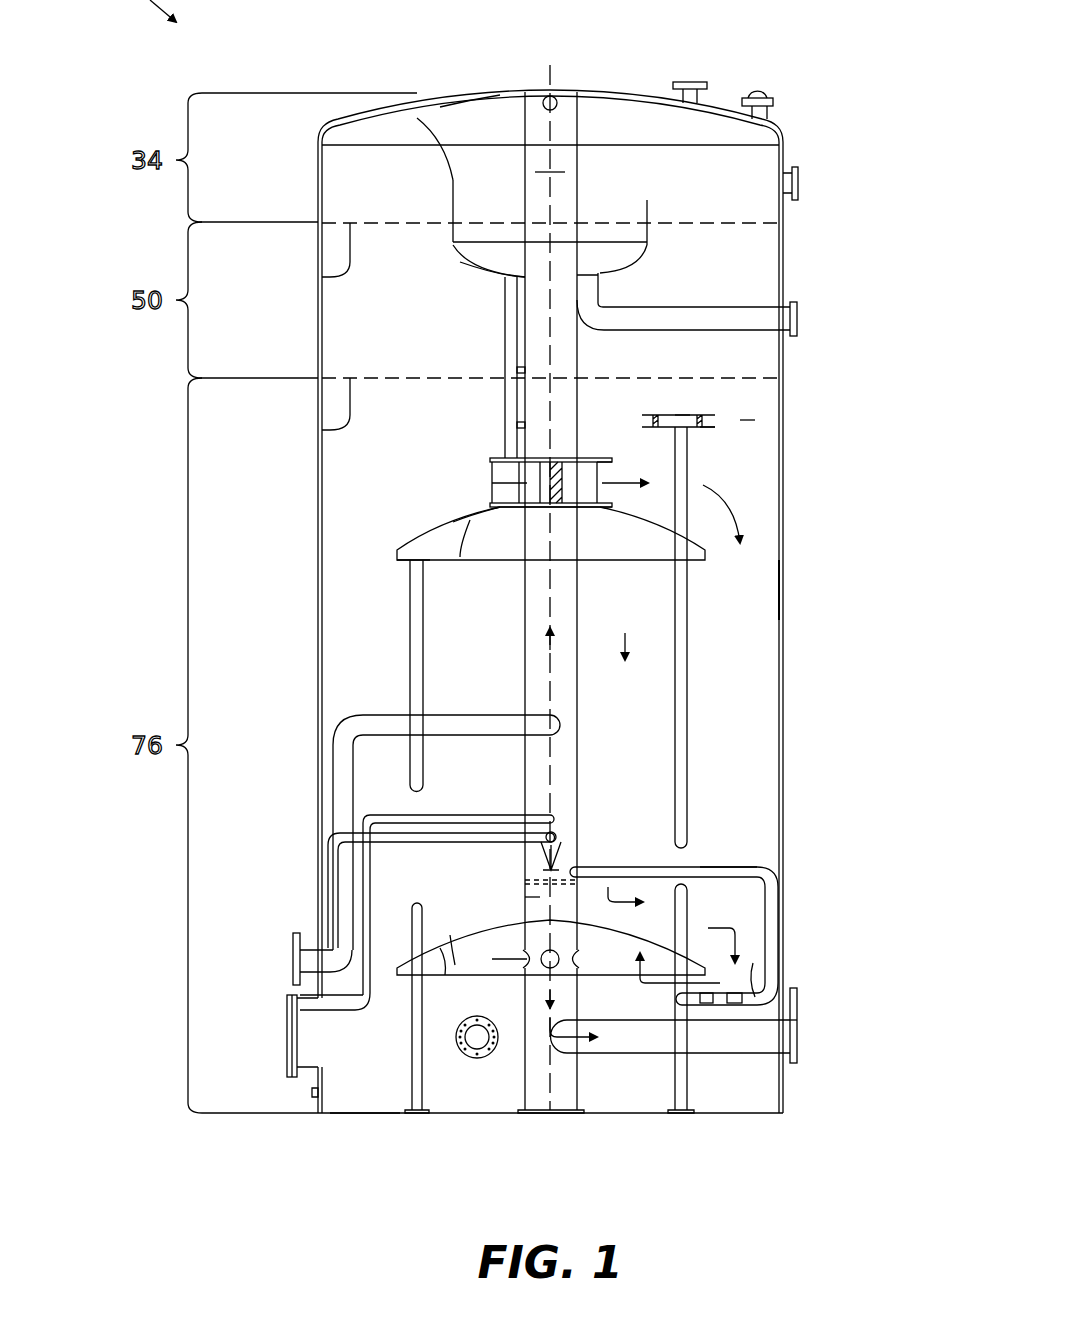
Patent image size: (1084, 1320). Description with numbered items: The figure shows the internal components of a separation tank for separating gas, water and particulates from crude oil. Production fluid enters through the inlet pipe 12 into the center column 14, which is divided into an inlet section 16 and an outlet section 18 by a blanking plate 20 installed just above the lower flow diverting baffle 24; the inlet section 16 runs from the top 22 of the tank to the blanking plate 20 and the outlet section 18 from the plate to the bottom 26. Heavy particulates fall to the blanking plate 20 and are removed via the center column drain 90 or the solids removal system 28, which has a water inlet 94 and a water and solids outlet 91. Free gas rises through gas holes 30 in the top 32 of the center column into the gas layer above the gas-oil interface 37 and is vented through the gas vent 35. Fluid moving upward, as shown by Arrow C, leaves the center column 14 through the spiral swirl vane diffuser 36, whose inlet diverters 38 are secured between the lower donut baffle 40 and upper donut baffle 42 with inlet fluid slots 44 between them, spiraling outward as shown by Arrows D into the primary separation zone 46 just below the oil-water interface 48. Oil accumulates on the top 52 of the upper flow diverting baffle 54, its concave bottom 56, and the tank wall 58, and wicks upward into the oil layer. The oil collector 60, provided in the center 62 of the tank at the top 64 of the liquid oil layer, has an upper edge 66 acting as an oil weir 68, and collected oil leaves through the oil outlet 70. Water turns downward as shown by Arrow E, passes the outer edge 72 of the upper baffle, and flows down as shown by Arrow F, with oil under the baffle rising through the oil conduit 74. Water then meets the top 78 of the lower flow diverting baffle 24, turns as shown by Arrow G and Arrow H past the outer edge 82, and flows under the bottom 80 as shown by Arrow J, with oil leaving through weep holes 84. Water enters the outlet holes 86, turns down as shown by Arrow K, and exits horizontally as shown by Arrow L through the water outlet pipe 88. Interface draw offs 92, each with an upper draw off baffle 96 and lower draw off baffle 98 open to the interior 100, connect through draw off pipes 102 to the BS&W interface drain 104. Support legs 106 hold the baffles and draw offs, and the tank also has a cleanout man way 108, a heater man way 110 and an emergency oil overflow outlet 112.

The inlet pipe 12 is at (340, 797).
The center column 14 is at (585, 128).
The inlet section 16 is at (563, 755).
The outlet section 18 is at (533, 897).
The blanking plate 20 is at (575, 870).
The top of the tank 22 is at (487, 92).
The lower flow diverting baffle 24 is at (447, 977).
The bottom of the tank 26 is at (337, 1115).
The solids removal system 28 is at (560, 837).
The gas holes 30 is at (557, 112).
The top of the center column 32 is at (540, 103).
The gas vent 35 is at (690, 82).
The spiral swirl vane diffuser 36 is at (500, 457).
The gas-oil interface 37 is at (322, 277).
The inlet diverters 38 is at (527, 483).
The lower donut baffle 40 is at (607, 510).
The upper donut baffle 42 is at (608, 460).
The inlet fluid slots 44 is at (563, 482).
The primary separation zone 46 is at (747, 422).
The oil-water interface 48 is at (322, 430).
The top of the upper flow diverting baffle 52 is at (453, 522).
The upper flow diverting baffle 54 is at (447, 540).
The bottom of the upper flow diverting baffle 56 is at (460, 557).
The tank wall 58 is at (779, 598).
The oil collector 60 is at (477, 263).
The center of the tank 62 is at (548, 172).
The top of the liquid oil layer 64 is at (380, 235).
The upper edge of the oil collector 66 is at (647, 223).
The oil weir 68 is at (417, 118).
The oil outlet 70 is at (800, 312).
The outer edge of the upper flow diverting baffle 72 is at (397, 553).
The oil conduit 74 is at (510, 345).
The top of the lower flow diverting baffle 78 is at (457, 935).
The bottom of the lower flow diverting baffle 80 is at (438, 977).
The outer edge of the lower flow diverting baffle 82 is at (393, 967).
The weep holes 84 is at (588, 923).
The outlet holes 86 is at (588, 922).
The water outlet pipe 88 is at (797, 1035).
The center column drain 90 is at (735, 866).
The water and solids outlet 91 is at (365, 916).
The interface draw offs 92 is at (682, 415).
The water inlet 94 is at (330, 862).
The upper draw off baffle 96 is at (712, 415).
The lower draw off baffle 98 is at (712, 427).
The interior of the tank 100 is at (740, 693).
The draw off pipe 102 is at (682, 793).
The BS&W interface drain 104 is at (772, 968).
The support legs 106 is at (415, 1067).
The cleanout man way 108 is at (290, 1043).
The heater man way 110 is at (470, 1037).
The emergency oil overflow outlet 112 is at (800, 185).
The Arrow C is at (552, 648).
The Arrows D is at (617, 487).
The Arrow E is at (752, 510).
The Arrow F is at (627, 637).
The Arrow G is at (643, 913).
The Arrow H is at (760, 923).
The Arrow J is at (660, 983).
The Arrow K is at (546, 1002).
The Arrow L is at (563, 1057).